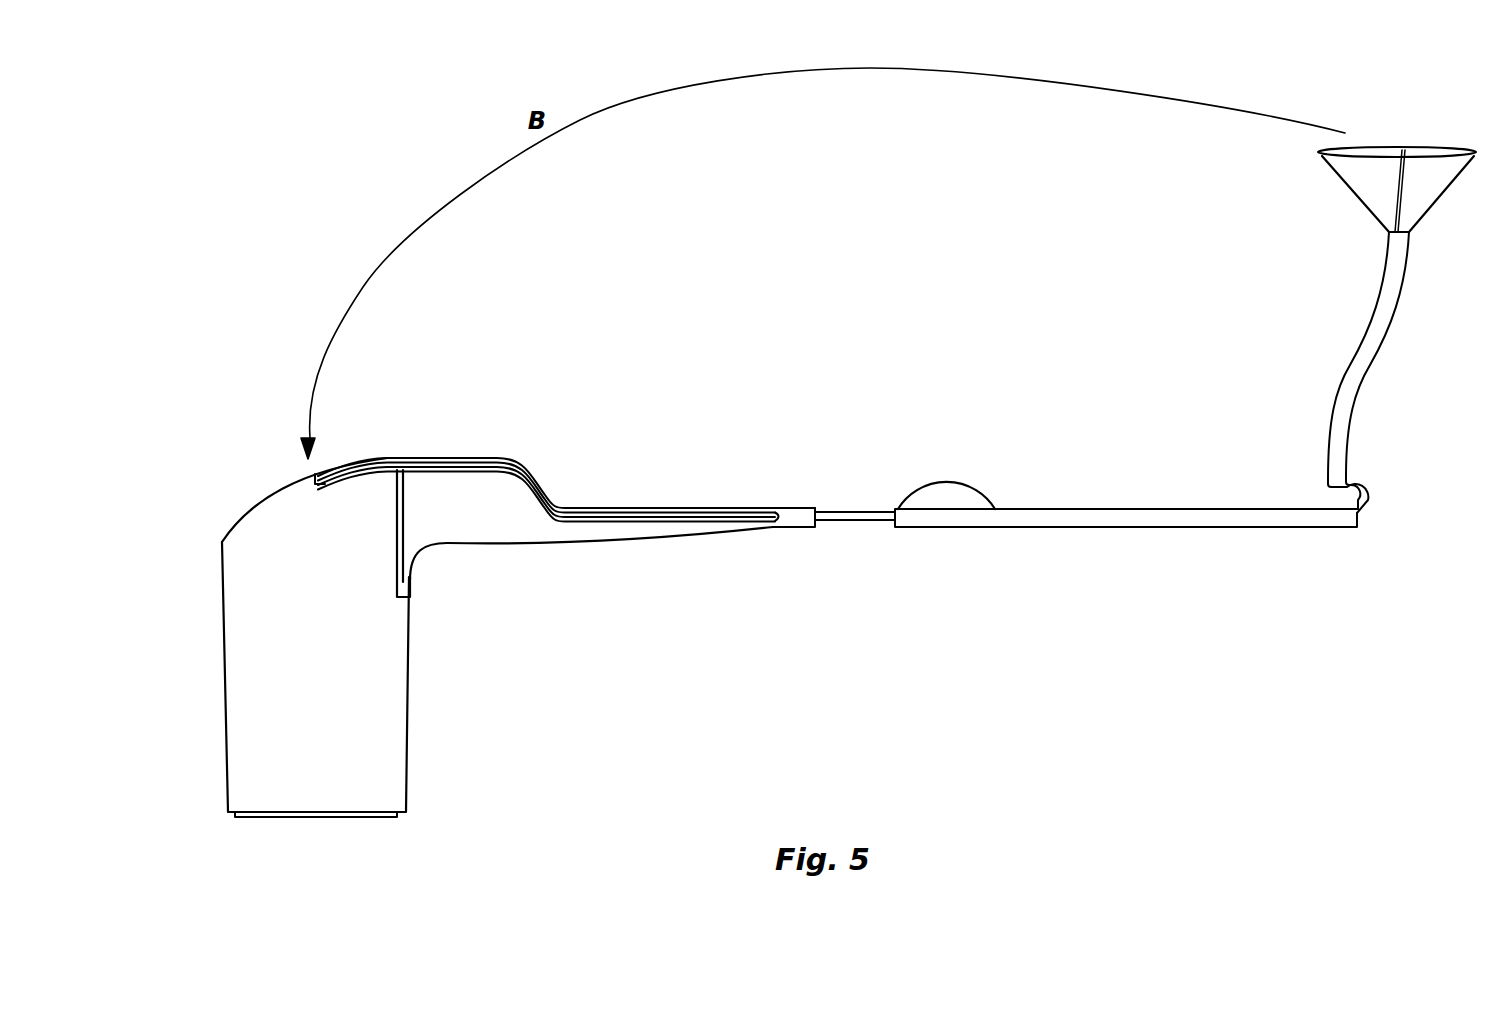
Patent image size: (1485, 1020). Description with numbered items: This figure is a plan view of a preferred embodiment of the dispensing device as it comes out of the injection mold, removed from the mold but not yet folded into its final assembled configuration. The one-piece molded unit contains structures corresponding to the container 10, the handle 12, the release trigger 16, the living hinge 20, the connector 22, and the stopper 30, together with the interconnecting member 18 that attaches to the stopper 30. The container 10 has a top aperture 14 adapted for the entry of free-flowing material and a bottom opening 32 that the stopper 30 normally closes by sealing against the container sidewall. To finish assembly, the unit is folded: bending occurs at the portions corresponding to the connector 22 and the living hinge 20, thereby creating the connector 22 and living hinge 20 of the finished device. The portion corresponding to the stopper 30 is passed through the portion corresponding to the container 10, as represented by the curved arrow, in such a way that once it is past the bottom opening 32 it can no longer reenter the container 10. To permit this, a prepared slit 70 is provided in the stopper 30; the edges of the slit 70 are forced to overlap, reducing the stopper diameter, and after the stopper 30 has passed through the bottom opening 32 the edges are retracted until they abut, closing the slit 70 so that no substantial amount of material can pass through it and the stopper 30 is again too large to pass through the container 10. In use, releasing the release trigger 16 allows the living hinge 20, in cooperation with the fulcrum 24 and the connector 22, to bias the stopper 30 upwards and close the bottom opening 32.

The container 10 is at (225, 675).
The handle 12 is at (655, 545).
The top aperture 14 is at (280, 492).
The release trigger 16 is at (1330, 530).
The interconnecting member 18 is at (1385, 352).
The living hinge 20 is at (860, 530).
The connector 22 is at (1375, 503).
The fulcrum 24 is at (950, 484).
The stopper 30 is at (1340, 185).
The bottom opening 32 is at (343, 817).
The prepared slit 70 is at (1403, 150).